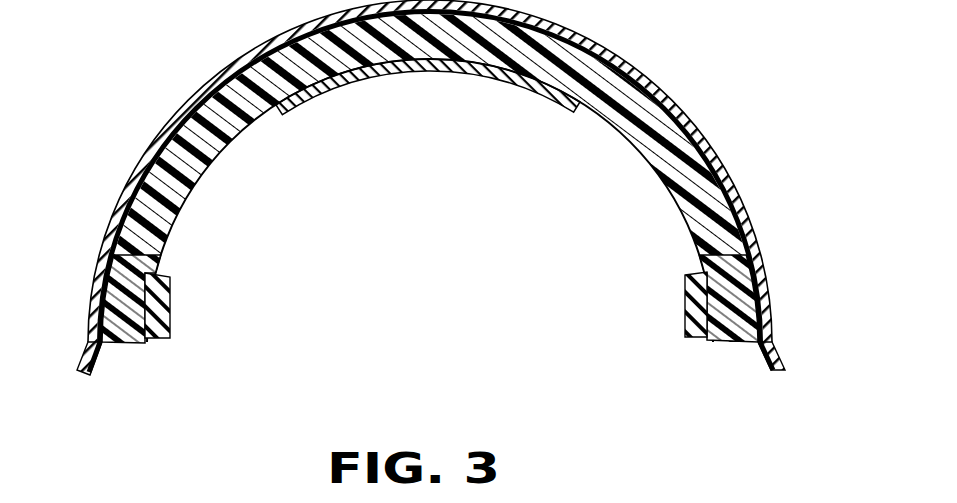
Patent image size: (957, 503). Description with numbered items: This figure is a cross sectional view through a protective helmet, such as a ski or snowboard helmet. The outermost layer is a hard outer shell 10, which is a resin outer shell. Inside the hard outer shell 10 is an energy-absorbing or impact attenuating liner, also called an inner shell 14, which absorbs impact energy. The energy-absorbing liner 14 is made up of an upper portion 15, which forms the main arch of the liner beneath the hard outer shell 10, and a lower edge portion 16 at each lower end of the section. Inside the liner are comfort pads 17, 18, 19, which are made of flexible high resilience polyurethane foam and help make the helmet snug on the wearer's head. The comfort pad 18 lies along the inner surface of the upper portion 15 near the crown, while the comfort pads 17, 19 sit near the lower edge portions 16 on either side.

The hard outer shell 10 is at (610, 50).
The energy-absorbing liner 14 is at (195, 93).
The upper portion 15 is at (690, 128).
The lower edge portion 16 is at (738, 225).
The comfort pad 17 is at (170, 300).
The comfort pad 18 is at (450, 68).
The comfort pad 19 is at (690, 297).